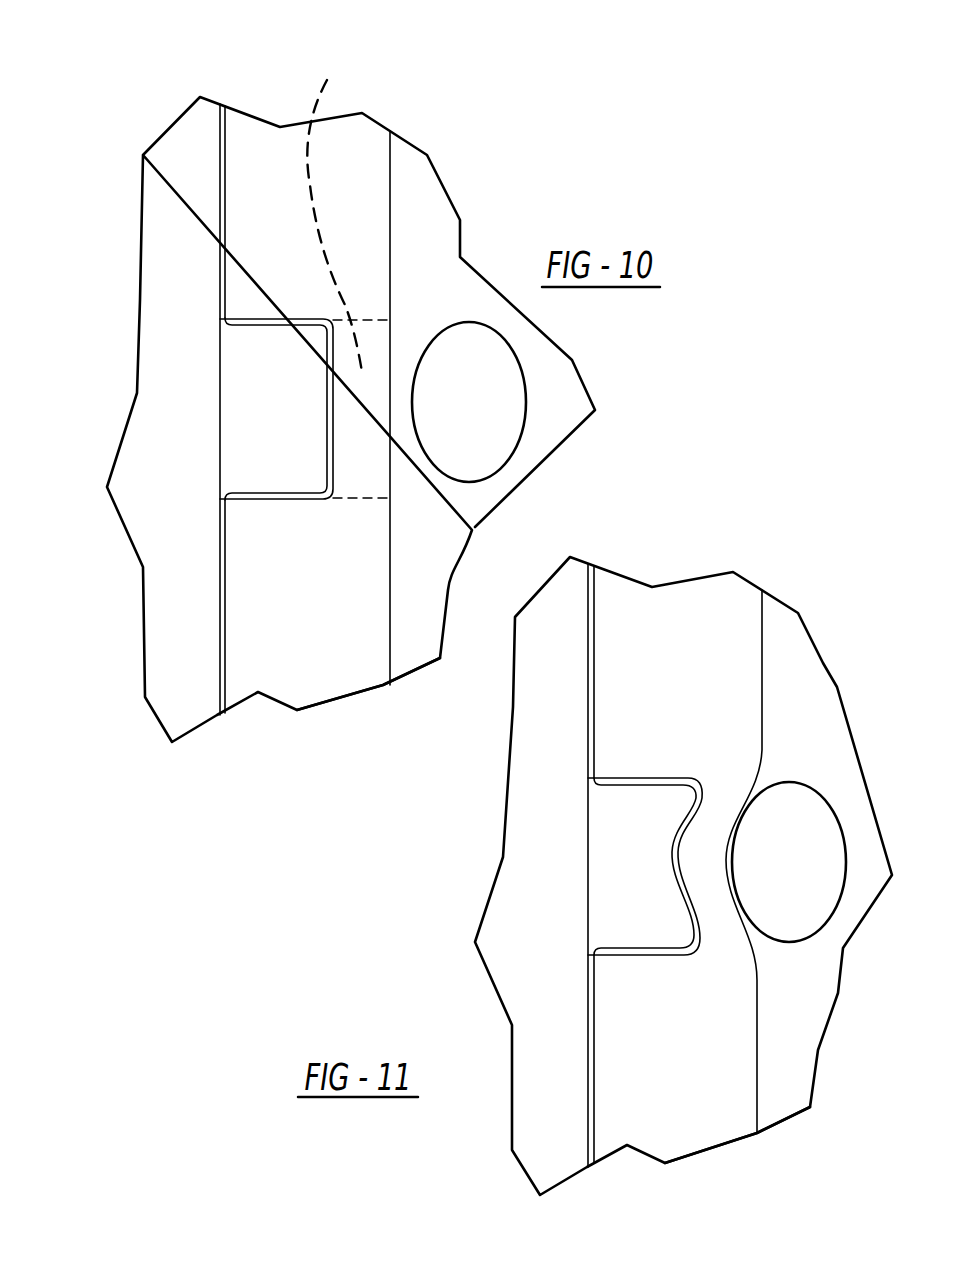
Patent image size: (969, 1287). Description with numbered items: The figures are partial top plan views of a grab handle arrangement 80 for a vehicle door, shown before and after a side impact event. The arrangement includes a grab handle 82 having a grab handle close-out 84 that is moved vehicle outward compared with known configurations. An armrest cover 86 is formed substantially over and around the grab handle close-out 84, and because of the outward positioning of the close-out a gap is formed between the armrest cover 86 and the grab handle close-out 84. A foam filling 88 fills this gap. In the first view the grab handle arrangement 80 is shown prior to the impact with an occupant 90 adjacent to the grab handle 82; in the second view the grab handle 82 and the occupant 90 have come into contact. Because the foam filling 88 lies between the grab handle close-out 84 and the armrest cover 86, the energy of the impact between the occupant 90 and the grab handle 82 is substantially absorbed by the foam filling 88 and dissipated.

In FIG. 10, the grab handle arrangement 80 is at (130, 237).
In FIG. 11, the grab handle arrangement 80 is at (453, 883).
In FIG. 10, the grab handle 82 is at (360, 473).
In FIG. 11, the grab handle 82 is at (717, 928).
In FIG. 10, the grab handle close-out 84 is at (330, 417).
In FIG. 11, the grab handle close-out 84 is at (683, 890).
In FIG. 10, the armrest cover 86 is at (360, 238).
In FIG. 11, the armrest cover 86 is at (695, 655).
In FIG. 10, the foam filling 88 is at (343, 205).
In FIG. 10, the occupant 90 is at (505, 402).
In FIG. 11, the occupant 90 is at (792, 718).